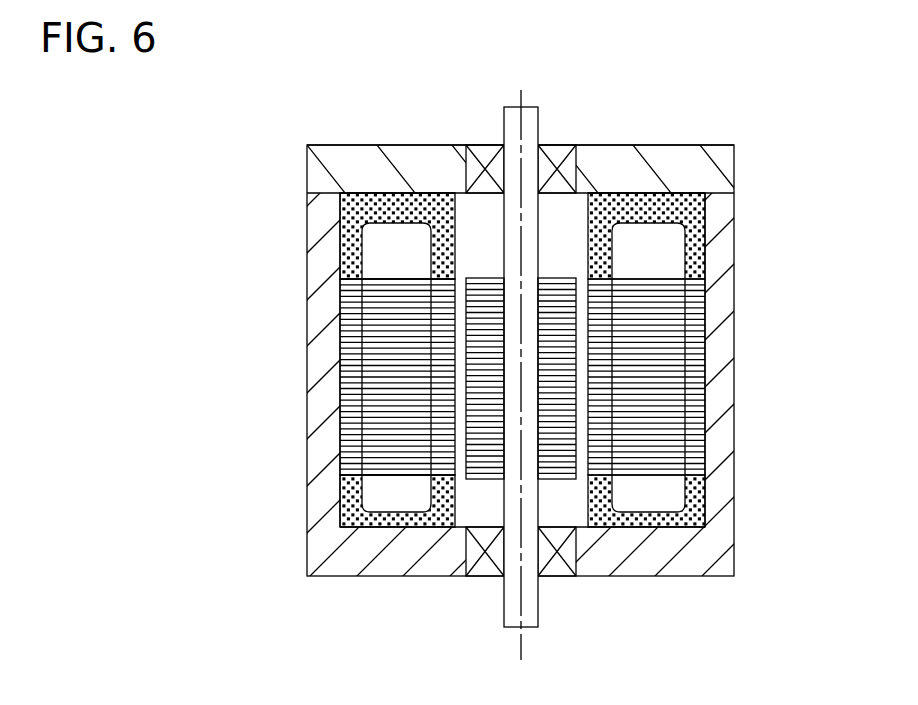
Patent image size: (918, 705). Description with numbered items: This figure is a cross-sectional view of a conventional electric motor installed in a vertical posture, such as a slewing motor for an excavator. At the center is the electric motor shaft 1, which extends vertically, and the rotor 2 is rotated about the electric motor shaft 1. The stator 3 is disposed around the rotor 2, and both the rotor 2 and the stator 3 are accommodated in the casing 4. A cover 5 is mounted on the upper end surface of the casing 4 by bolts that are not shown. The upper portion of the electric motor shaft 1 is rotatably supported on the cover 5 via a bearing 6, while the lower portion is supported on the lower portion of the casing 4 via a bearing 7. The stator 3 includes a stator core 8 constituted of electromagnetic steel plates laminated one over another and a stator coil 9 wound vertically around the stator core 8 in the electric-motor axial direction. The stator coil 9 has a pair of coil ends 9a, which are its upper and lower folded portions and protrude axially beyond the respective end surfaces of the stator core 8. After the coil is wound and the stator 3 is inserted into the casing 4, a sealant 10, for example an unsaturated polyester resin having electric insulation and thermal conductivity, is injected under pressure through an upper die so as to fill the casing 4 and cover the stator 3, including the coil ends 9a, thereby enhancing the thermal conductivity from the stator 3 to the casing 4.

The electric motor shaft 1 is at (508, 107).
The rotor 2 is at (557, 279).
The stator 3 is at (460, 360).
The casing 4 is at (727, 346).
The cover 5 is at (444, 145).
The bearing 6 is at (562, 146).
The bearing 7 is at (482, 577).
The stator core 8 is at (340, 312).
The stator coil 9 is at (358, 380).
The coil end 9a is at (400, 224).
The sealant 10 is at (340, 497).